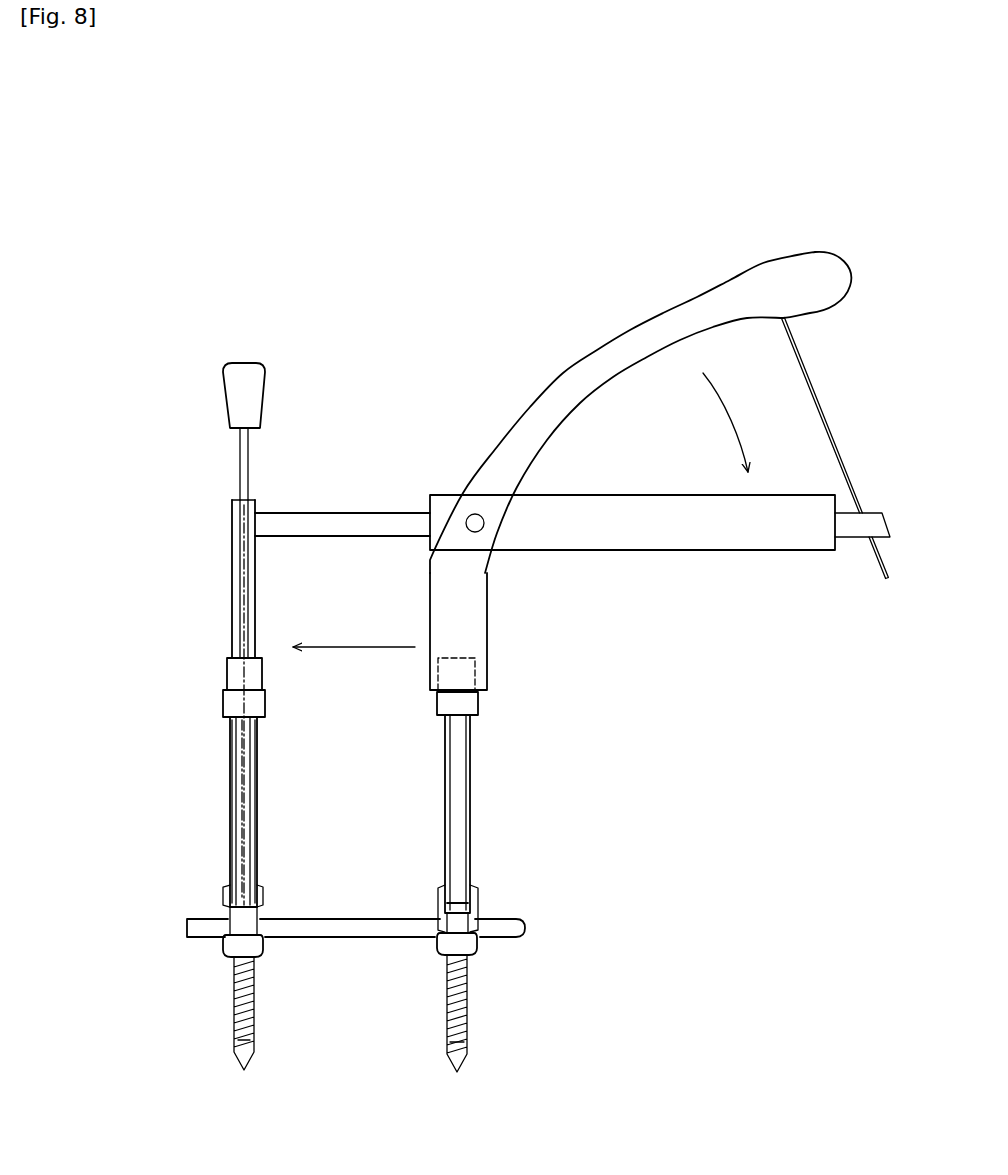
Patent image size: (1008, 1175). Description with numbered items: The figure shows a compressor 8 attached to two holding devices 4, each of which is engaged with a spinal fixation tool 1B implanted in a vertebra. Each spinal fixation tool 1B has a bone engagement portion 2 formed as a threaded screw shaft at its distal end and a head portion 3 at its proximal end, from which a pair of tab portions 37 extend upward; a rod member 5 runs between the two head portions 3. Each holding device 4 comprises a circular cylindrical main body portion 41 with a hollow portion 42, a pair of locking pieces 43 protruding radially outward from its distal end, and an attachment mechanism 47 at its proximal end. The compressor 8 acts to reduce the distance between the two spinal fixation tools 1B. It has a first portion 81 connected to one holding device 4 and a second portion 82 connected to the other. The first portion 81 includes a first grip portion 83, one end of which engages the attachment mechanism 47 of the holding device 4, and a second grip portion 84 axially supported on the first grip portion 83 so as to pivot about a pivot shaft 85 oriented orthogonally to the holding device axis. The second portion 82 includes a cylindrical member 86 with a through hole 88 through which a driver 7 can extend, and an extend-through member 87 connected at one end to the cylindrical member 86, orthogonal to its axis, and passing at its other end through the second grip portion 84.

The compressor 8 is at (576, 282).
The driver 7 is at (222, 455).
The through hole 88 is at (230, 530).
The second portion 82 is at (222, 577).
The cylindrical member 86 is at (256, 585).
The extend-through member 87 is at (338, 510).
The pivot shaft 85 is at (475, 514).
The first grip portion 83 is at (482, 604).
The first portion 81 is at (571, 571).
The second grip portion 84 is at (697, 540).
The attachment mechanism 47 is at (225, 672).
The spinal fixation tool holding device 4 is at (262, 733).
The tab portions 37 is at (243, 752).
The main body portion 41 is at (258, 783).
The hollow portion 42 is at (240, 812).
The locking pieces 43 is at (225, 900).
The rod member 5 is at (347, 925).
The head portion 3 is at (215, 958).
The bone engagement portion 2 is at (252, 1003).
The spinal fixation tool 1B is at (220, 1042).